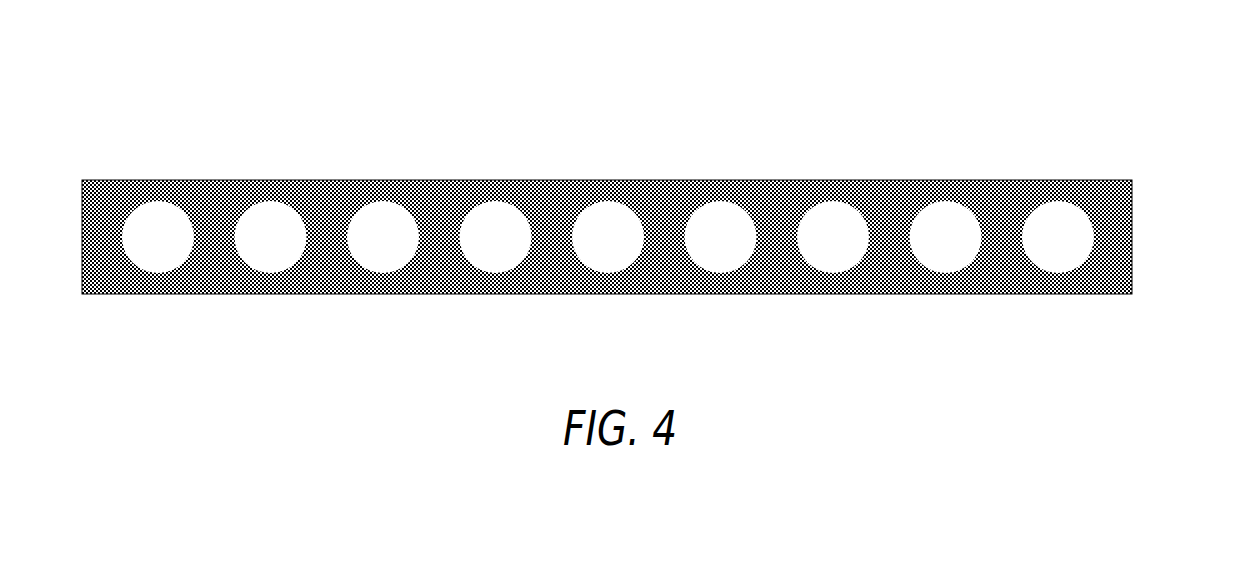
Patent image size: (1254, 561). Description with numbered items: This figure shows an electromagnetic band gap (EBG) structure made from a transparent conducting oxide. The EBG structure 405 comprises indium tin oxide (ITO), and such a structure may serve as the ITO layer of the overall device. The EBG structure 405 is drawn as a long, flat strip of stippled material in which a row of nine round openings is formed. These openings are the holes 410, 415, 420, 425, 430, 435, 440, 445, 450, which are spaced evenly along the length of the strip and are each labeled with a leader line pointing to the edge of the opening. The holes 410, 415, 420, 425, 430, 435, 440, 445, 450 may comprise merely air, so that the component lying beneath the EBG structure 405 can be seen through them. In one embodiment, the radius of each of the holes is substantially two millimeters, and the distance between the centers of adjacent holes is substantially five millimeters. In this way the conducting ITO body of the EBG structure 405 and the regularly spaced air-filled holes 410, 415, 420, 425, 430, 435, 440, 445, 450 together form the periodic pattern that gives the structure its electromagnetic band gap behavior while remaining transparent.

The EBG structure 405 is at (1132, 250).
The hole 410 is at (173, 203).
The hole 415 is at (286, 203).
The hole 420 is at (398, 203).
The hole 425 is at (510, 203).
The hole 430 is at (623, 203).
The hole 435 is at (736, 203).
The hole 440 is at (848, 203).
The hole 445 is at (960, 203).
The hole 450 is at (1073, 203).